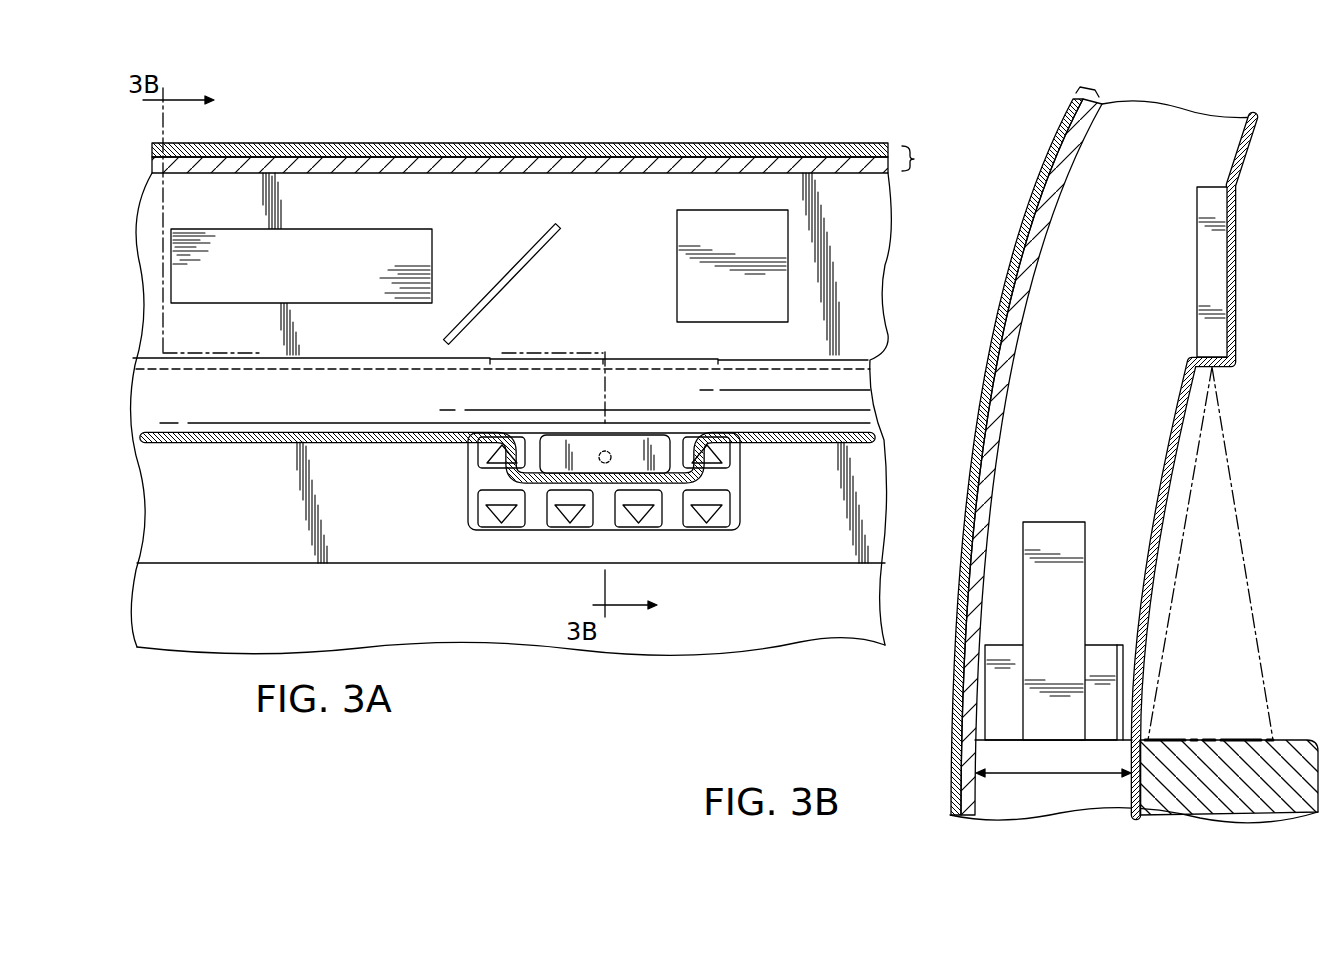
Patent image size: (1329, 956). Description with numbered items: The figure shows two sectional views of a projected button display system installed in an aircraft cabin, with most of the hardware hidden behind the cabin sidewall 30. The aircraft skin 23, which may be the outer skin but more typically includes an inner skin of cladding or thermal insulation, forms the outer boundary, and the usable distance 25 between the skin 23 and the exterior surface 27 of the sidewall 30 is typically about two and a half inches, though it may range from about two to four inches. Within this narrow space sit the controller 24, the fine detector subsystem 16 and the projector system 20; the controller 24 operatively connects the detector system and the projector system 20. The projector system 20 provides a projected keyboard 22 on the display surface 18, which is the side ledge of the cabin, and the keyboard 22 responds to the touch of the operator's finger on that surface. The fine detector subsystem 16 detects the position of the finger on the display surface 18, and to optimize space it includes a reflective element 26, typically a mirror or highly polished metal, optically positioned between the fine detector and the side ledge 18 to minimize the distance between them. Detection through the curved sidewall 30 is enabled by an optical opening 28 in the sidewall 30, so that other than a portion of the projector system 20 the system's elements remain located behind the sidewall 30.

In FIG. 3A, the fine detector subsystem 16 is at (727, 210).
In FIG. 3A, the display surface 18 is at (858, 471).
In FIG. 3B, the display surface 18 is at (1296, 740).
In FIG. 3A, the projector system 20 is at (622, 443).
In FIG. 3B, the projector system 20 is at (1217, 252).
In FIG. 3A, the projected keyboard 22 is at (742, 490).
In FIG. 3B, the projected keyboard 22 is at (1238, 740).
In FIG. 3A, the skin 23 is at (544, 158).
In FIG. 3B, the skin 23 is at (1030, 438).
In FIG. 3A, the controller 24 is at (336, 243).
In FIG. 3B, the controller 24 is at (1048, 528).
In FIG. 3A, the usable distance 25 is at (866, 242).
In FIG. 3B, the usable distance 25 is at (1003, 777).
In FIG. 3A, the reflective element 26 is at (518, 258).
In FIG. 3B, the reflective element 26 is at (993, 690).
In FIG. 3A, the exterior surface 27 is at (858, 352).
In FIG. 3B, the optical opening 28 is at (1142, 712).
In FIG. 3A, the sidewall 30 is at (853, 383).
In FIG. 3B, the sidewall 30 is at (1233, 325).